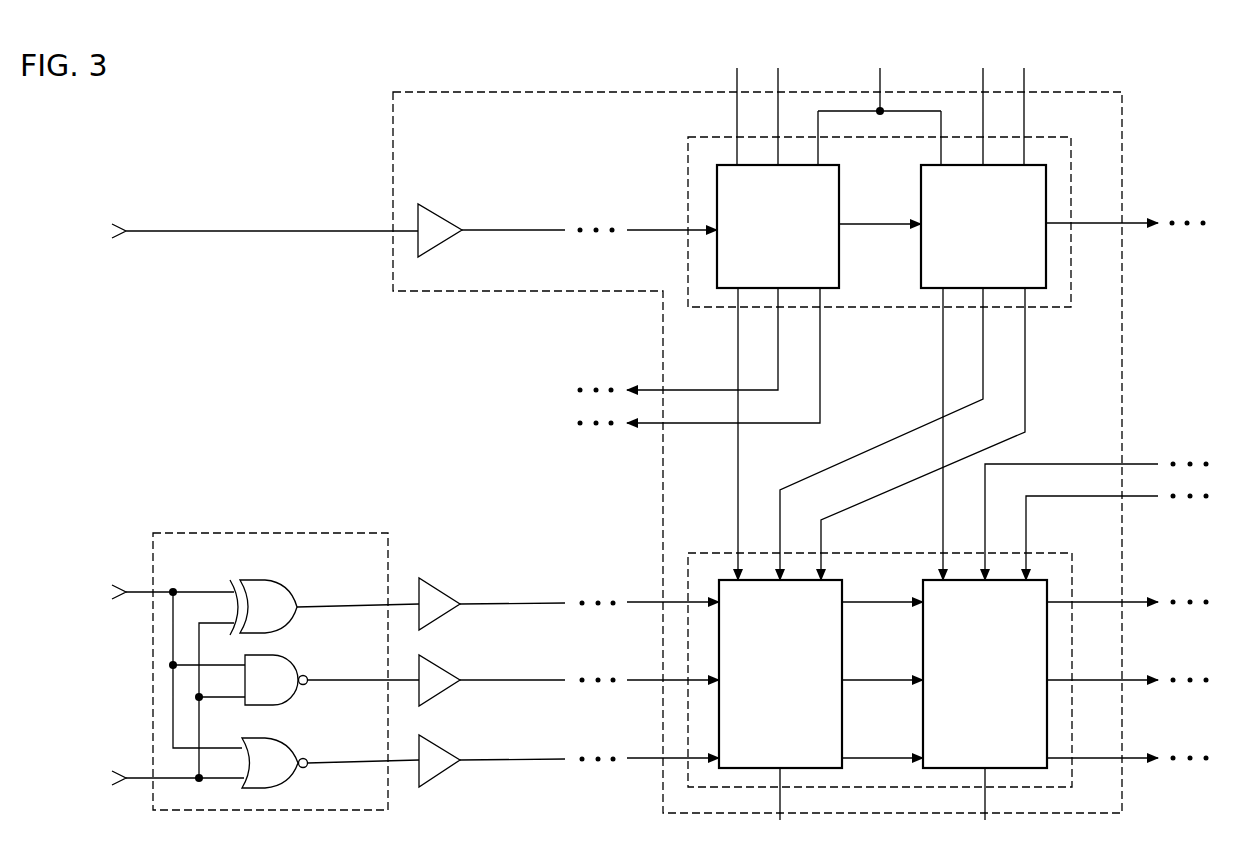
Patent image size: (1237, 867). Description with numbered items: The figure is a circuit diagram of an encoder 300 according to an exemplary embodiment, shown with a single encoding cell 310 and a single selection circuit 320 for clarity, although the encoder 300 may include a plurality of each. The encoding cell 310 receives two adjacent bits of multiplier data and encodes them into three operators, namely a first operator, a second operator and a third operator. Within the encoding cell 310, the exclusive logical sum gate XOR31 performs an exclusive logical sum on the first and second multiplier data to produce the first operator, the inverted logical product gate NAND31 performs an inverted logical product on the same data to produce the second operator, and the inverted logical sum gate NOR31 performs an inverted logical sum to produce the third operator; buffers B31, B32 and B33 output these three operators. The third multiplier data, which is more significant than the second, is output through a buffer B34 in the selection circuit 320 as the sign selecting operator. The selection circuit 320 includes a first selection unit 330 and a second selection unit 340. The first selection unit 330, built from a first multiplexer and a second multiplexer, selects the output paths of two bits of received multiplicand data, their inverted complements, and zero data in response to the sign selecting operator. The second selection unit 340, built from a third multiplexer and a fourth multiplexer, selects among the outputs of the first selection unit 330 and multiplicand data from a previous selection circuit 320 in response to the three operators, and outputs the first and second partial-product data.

The encoder 300 is at (236, 115).
The encoding cell 310 is at (267, 532).
The selection circuit 320 is at (540, 93).
The first selection unit 330 is at (1047, 133).
The second selection unit 340 is at (1048, 549).
The buffer B31 is at (447, 590).
The buffer B32 is at (447, 668).
The buffer B33 is at (447, 746).
The buffer B34 is at (445, 213).
The exclusive logical sum gate XOR31 is at (273, 576).
The inverted logical product gate NAND31 is at (283, 648).
The inverted logical sum gate NOR31 is at (273, 738).